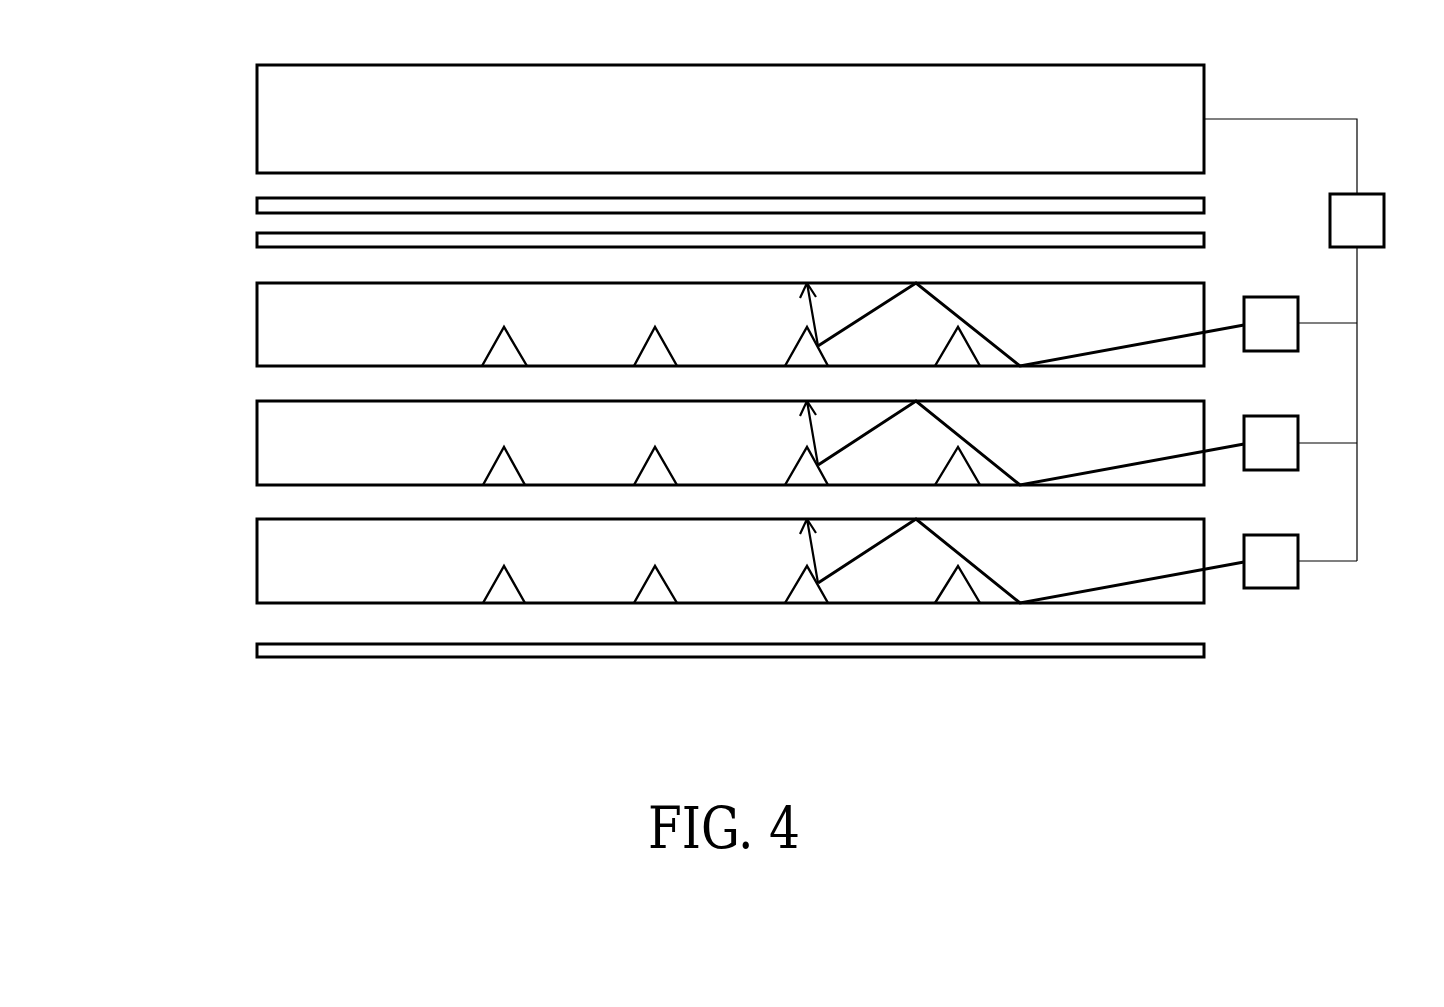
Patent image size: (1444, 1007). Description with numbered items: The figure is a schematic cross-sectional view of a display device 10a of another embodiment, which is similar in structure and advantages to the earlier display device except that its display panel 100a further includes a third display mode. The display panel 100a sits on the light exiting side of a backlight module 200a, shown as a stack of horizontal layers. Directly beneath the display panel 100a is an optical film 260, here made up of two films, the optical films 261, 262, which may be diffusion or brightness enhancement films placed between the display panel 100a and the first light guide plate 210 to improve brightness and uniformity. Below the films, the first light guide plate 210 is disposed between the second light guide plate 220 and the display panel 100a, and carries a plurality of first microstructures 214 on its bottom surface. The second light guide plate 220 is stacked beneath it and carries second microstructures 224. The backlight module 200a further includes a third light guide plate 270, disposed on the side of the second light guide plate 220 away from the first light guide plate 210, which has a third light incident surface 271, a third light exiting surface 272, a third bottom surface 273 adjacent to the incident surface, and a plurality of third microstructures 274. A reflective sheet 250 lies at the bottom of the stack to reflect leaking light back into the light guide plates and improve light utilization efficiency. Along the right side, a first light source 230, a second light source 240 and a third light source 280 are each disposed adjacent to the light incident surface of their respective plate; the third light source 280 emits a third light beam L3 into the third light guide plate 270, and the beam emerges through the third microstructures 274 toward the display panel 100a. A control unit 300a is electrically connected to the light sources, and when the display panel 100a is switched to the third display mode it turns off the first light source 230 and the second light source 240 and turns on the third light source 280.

The display device 10a is at (179, 87).
The display panel 100a is at (273, 136).
The backlight module 200a is at (105, 510).
The first light guide plate 210 is at (273, 324).
The first microstructures 214 is at (506, 356).
The second light guide plate 220 is at (273, 440).
The second microstructures 224 is at (505, 473).
The first light source 230 is at (1282, 292).
The second light source 240 is at (1298, 422).
The reflective sheet 250 is at (258, 651).
The optical film 260 is at (133, 183).
The optical film 261 is at (258, 206).
The optical film 262 is at (258, 242).
The third light guide plate 270 is at (273, 558).
The third light incident surface 271 is at (1220, 598).
The third light exiting surface 272 is at (388, 538).
The third bottom surface 273 is at (441, 599).
The third microstructures 274 is at (502, 593).
The third light source 280 is at (1298, 542).
The control unit 300a is at (1384, 220).
The third light beam L3 is at (1150, 582).